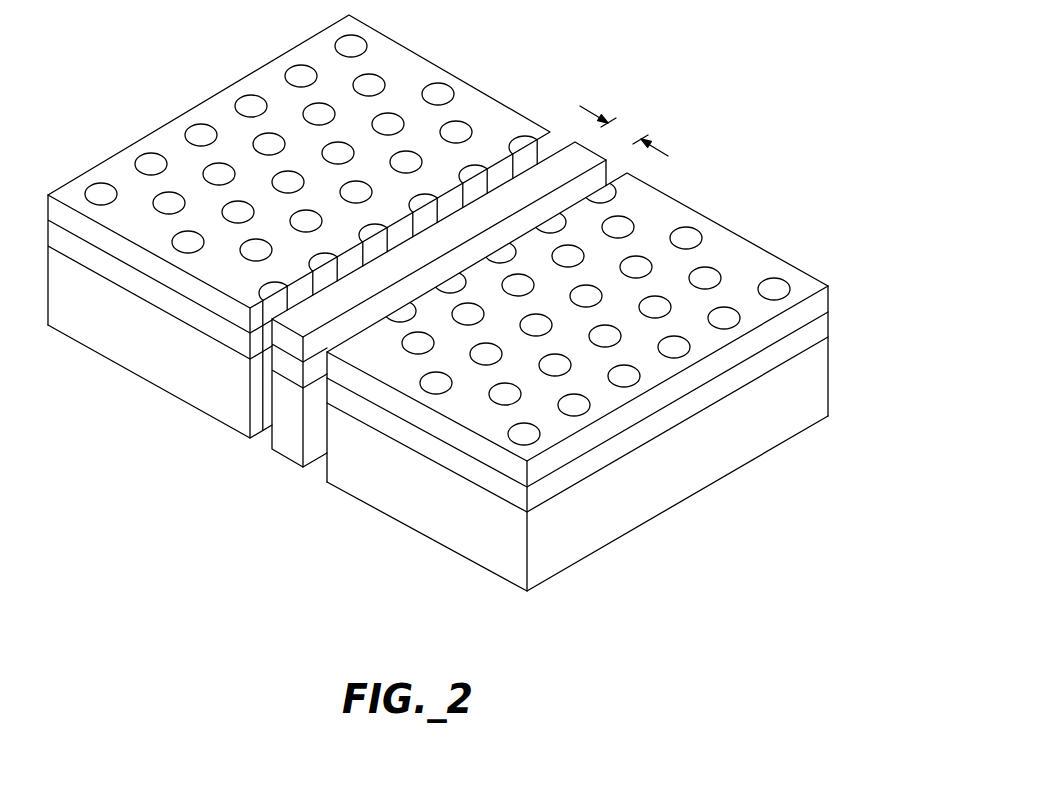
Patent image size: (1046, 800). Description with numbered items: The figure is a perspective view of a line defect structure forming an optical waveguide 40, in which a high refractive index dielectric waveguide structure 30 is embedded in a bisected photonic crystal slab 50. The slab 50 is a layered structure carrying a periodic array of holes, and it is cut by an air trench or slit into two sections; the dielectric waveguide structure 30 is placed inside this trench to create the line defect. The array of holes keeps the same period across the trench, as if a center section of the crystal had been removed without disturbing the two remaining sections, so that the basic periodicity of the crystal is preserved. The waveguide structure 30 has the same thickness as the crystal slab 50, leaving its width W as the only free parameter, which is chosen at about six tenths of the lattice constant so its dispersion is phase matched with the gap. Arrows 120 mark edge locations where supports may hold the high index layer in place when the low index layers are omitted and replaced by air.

The optical waveguide 40 is at (730, 124).
The bisected photonic crystal slab 50 is at (200, 411).
The dielectric waveguide structure 30 is at (280, 466).
The support locations 120 is at (48, 343).
The waveguide width W is at (624, 131).